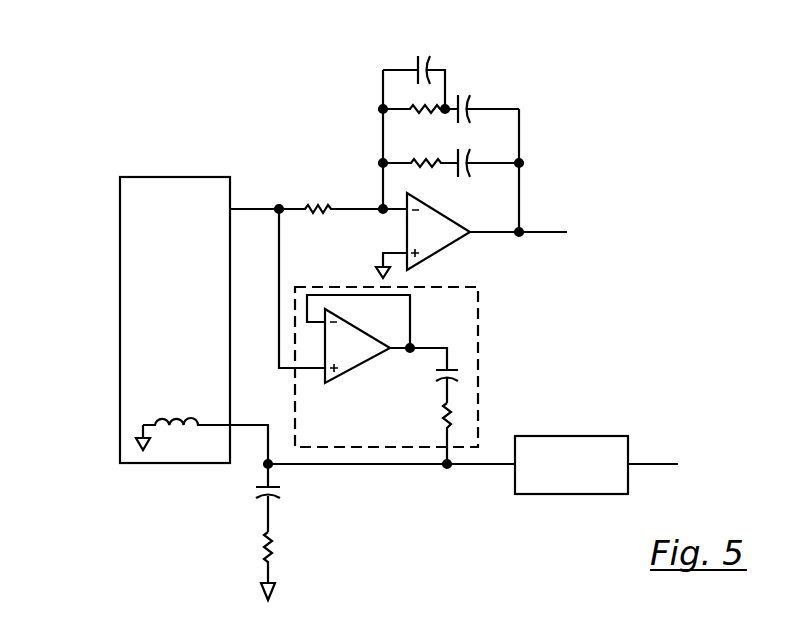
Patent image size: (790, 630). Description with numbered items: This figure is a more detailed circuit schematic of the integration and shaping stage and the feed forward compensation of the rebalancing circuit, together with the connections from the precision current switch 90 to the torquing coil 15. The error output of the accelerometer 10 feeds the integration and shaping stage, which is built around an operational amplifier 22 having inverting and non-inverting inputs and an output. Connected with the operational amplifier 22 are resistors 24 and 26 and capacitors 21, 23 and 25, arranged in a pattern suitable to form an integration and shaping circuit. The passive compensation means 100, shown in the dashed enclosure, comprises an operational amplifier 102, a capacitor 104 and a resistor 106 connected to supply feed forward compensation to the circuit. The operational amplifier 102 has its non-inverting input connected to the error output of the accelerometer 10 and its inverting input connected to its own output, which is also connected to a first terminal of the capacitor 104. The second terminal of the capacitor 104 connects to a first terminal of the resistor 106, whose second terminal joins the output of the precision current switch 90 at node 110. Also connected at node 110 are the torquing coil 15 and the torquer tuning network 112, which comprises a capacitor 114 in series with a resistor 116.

The accelerometer 10 is at (120, 239).
The torquing coil 15 is at (180, 426).
The capacitor 21 is at (470, 150).
The operational amplifier 22 is at (450, 222).
The capacitor 23 is at (465, 100).
The resistor 24 is at (411, 165).
The capacitor 25 is at (426, 52).
The resistor 26 is at (423, 117).
The precision current switch 90 is at (578, 436).
The passive compensation means 100 is at (478, 335).
The operational amplifier 102 is at (353, 360).
The capacitor 104 is at (460, 377).
The resistor 106 is at (443, 417).
The node 110 is at (445, 470).
The torquer tuning network 112 is at (290, 527).
The capacitor 114 is at (253, 493).
The resistor 116 is at (258, 545).